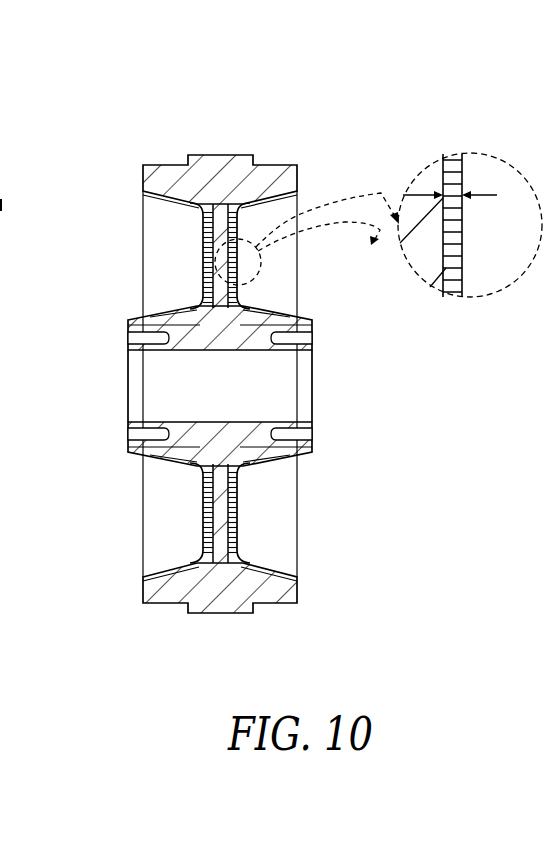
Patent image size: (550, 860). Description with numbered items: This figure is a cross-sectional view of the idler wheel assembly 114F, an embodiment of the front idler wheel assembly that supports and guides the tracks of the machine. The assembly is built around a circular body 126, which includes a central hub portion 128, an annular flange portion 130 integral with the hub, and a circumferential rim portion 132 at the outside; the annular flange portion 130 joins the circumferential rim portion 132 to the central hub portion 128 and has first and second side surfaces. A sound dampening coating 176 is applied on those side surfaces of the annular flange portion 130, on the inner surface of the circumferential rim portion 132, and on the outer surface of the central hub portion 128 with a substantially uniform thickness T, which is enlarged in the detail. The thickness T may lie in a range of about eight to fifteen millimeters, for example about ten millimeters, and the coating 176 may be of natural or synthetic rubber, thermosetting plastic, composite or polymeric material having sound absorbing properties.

The idler wheel assembly 114F is at (88, 114).
The circumferential rim portion 132 is at (148, 172).
The sound dampening coating 176 is at (0, 369).
The thickness T is at (450, 187).
The central hub portion 128 is at (130, 439).
The annular flange portion 130 is at (222, 487).
The circular body 126 is at (139, 588).